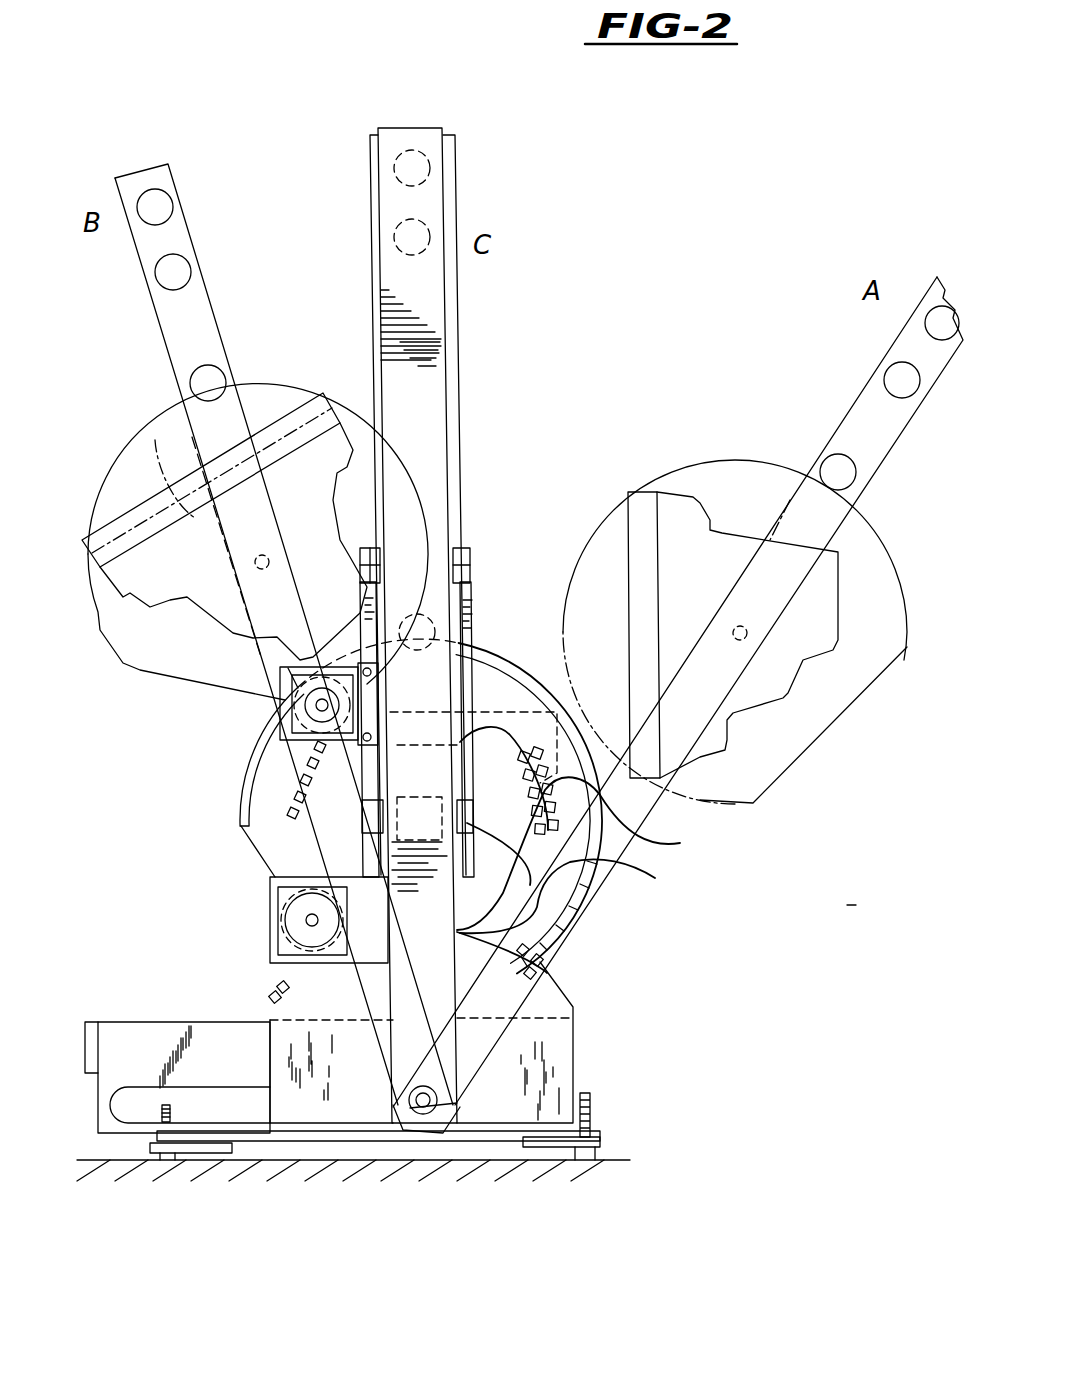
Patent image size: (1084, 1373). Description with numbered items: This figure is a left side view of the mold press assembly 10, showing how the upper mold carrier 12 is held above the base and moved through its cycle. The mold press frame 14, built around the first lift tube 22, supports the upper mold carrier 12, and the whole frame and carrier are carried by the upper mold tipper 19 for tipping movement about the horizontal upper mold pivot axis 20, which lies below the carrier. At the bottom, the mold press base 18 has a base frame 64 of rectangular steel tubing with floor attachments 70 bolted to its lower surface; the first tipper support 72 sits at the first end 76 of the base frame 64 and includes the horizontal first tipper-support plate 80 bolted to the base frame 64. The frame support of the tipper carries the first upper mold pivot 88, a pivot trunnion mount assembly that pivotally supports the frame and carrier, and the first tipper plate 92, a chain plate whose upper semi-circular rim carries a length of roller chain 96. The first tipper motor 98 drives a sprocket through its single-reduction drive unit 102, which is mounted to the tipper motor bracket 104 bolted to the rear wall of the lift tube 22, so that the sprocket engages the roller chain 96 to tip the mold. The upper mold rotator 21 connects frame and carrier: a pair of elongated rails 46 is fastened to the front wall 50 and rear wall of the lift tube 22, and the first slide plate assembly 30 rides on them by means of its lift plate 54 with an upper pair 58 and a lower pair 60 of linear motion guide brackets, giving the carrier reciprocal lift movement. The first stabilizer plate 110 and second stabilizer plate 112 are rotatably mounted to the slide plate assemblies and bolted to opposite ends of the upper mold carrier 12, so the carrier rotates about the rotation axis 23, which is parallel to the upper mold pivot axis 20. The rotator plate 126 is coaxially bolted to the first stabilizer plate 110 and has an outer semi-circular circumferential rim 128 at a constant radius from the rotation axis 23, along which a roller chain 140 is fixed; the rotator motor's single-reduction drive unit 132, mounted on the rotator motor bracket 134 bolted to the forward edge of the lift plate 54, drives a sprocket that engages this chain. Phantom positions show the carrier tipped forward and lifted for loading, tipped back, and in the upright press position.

The mold press assembly 10 is at (720, 242).
The upper mold carrier 12 is at (523, 712).
The mold press frame 14 is at (415, 125).
The mold press base 18 is at (93, 1097).
The upper mold tipper 19 is at (267, 937).
The upper mold pivot axis 20 is at (437, 1107).
The upper mold rotator 21 is at (233, 807).
The first lift tube 22 is at (438, 322).
The rotation axis 23 is at (387, 840).
The first slide plate assembly 30 is at (473, 587).
The elongated rails 46 is at (370, 183).
The front wall 50 is at (447, 145).
The lift plate 54 is at (462, 613).
The upper pair of linear motion guide brackets 58 is at (360, 560).
The lower pair of linear motion guide brackets 60 is at (417, 703).
The base frame 64 is at (95, 1062).
The floor attachments 70 is at (203, 1153).
The first tipper support 72 is at (173, 1037).
The first end of the base frame 76 is at (95, 1060).
The first tipper-support plate 80 is at (230, 1052).
The first upper mold pivot 88 is at (440, 1110).
The first tipper plate 92 is at (570, 1027).
The roller chain 96 is at (553, 968).
The first tipper motor 98 is at (300, 920).
The single-reduction drive unit 102 is at (316, 945).
The tipper motor bracket 104 is at (275, 878).
The first stabilizer plate 110 is at (260, 783).
The second stabilizer plate 112 is at (155, 425).
The rotator plate 126 is at (578, 916).
The outer semi-circular circumferential rim 128 is at (460, 740).
The single-reduction drive unit 132 is at (285, 670).
The rotator motor bracket 134 is at (280, 730).
The roller chain 140 is at (591, 853).